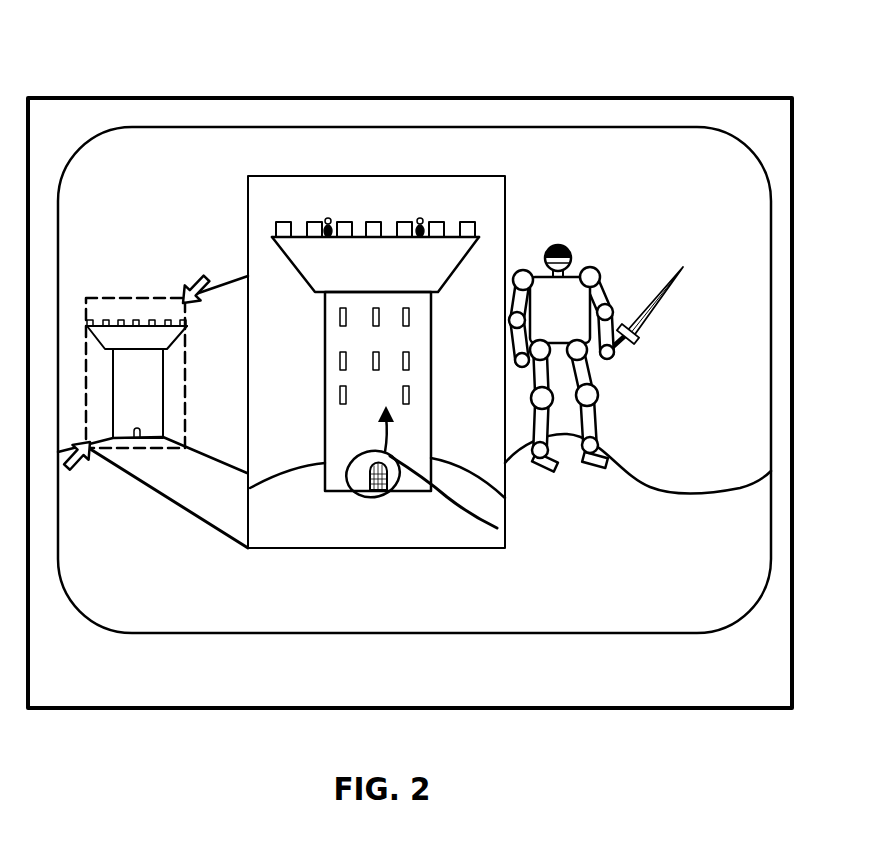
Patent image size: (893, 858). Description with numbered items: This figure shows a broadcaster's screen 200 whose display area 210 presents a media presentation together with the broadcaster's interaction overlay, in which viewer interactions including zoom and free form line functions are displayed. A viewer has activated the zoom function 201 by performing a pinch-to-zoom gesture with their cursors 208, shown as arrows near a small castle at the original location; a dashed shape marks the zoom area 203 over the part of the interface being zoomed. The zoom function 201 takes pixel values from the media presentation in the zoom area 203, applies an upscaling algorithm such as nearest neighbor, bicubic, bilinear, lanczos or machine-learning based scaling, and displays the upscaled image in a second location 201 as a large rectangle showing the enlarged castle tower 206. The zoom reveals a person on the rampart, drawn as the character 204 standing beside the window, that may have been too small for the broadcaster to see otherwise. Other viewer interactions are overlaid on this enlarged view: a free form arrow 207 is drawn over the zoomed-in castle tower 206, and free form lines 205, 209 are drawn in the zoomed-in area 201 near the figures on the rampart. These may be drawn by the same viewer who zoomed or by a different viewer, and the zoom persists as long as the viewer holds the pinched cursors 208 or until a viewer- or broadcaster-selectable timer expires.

The game display screen 200 is at (114, 87).
The zoom function 201 is at (505, 197).
The zoom area 203 is at (95, 295).
The player character 204 is at (542, 313).
The free form line 205 is at (328, 215).
The castle tower 206 is at (356, 270).
The free form arrow 207 is at (445, 494).
The cursor 208 is at (207, 275).
The free form line 209 is at (337, 222).
The display area 210 is at (427, 127).